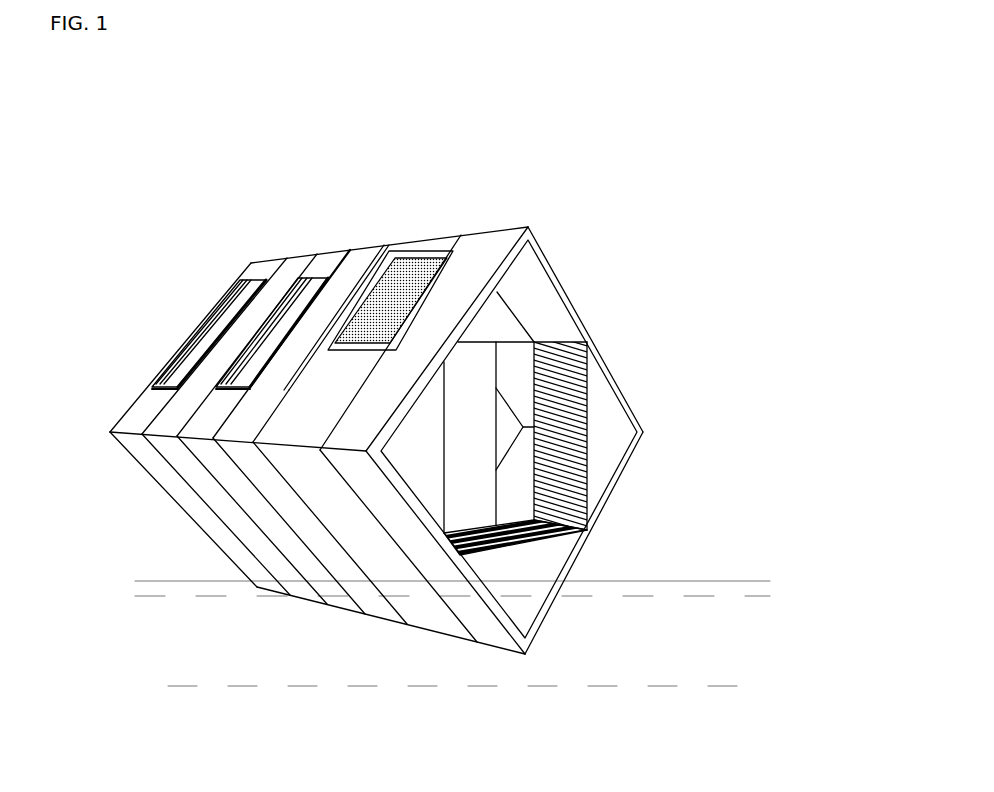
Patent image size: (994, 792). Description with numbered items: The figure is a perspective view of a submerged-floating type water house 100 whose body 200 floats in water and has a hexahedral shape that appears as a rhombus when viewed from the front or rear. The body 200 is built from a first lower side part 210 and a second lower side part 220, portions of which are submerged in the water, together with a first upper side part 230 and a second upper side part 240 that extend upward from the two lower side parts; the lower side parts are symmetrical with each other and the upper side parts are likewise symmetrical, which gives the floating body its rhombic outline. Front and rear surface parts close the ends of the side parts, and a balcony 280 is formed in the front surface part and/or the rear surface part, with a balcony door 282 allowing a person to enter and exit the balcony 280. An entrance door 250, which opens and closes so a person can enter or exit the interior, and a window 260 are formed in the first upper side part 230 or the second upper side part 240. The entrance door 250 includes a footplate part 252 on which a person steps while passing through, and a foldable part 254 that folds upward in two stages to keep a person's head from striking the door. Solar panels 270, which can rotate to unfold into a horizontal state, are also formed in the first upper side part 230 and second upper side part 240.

The submerged-floating type water house 100 is at (752, 183).
The body 200 is at (627, 388).
The first lower side part 210 is at (426, 607).
The second lower side part 220 is at (612, 495).
The first upper side part 230 is at (488, 246).
The second upper side part 240 is at (578, 314).
The entrance door 250 is at (332, 318).
The footplate part 252 is at (253, 420).
The foldable part 254 is at (380, 265).
The window 260 is at (285, 337).
The solar panels 270 is at (415, 265).
The balcony 280 is at (540, 531).
The balcony door 282 is at (578, 437).